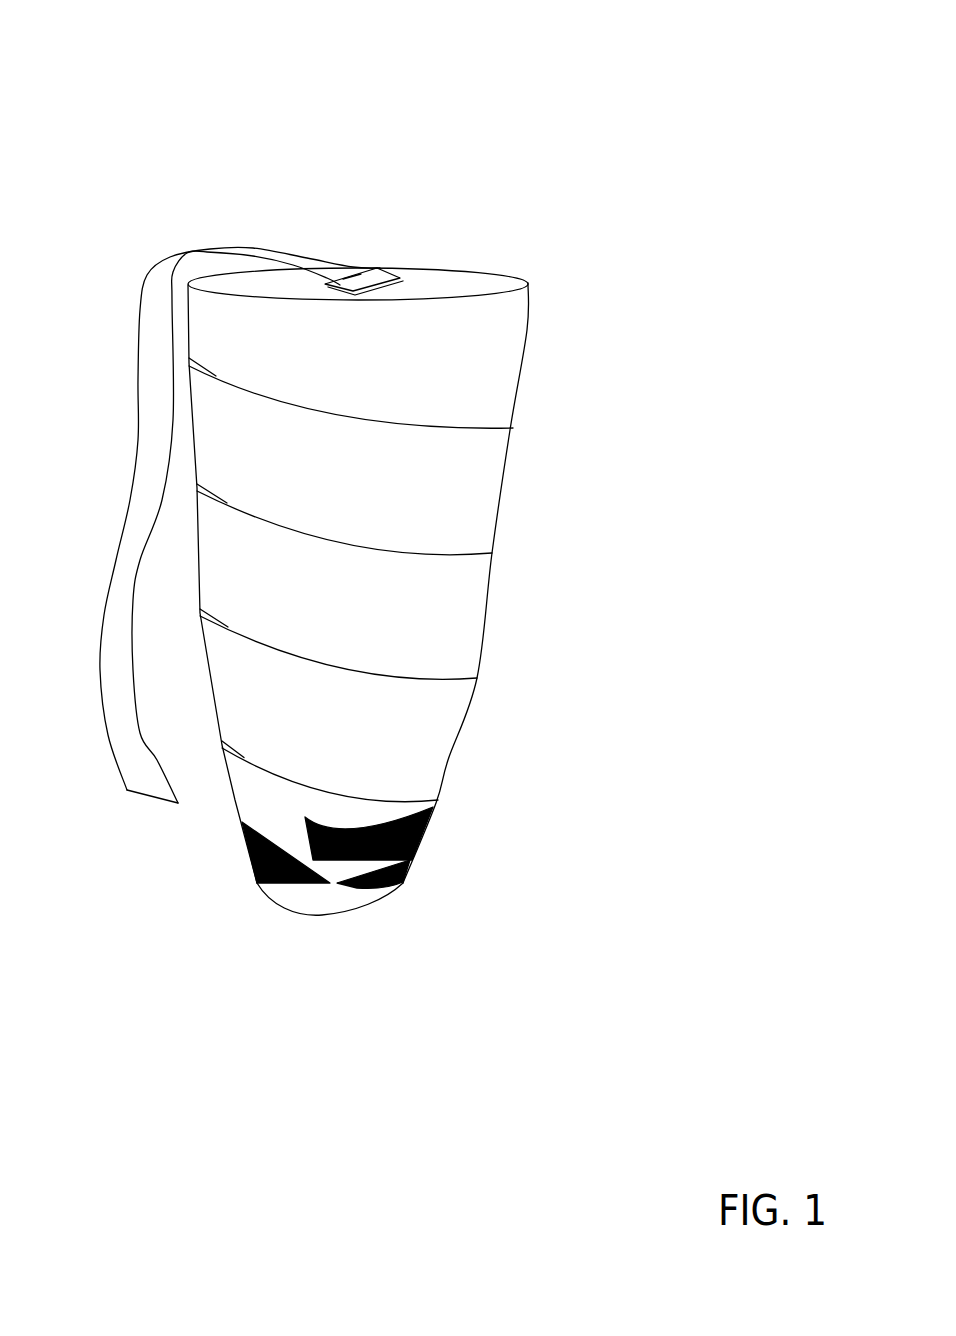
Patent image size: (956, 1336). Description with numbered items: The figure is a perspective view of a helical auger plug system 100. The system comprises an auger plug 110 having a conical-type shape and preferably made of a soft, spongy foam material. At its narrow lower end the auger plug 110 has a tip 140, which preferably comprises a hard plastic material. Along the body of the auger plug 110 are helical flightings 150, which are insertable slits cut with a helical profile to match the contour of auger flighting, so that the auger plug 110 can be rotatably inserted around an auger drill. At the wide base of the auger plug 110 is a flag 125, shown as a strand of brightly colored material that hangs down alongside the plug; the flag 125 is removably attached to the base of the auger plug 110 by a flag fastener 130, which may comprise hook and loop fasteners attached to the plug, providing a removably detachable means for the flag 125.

The helical auger plug system 100 is at (600, 88).
The auger plug 110 is at (465, 280).
The flag 125 is at (152, 400).
The flag fastener 130 is at (353, 272).
The tip 140 is at (273, 920).
The helical flightings 150 is at (515, 430).